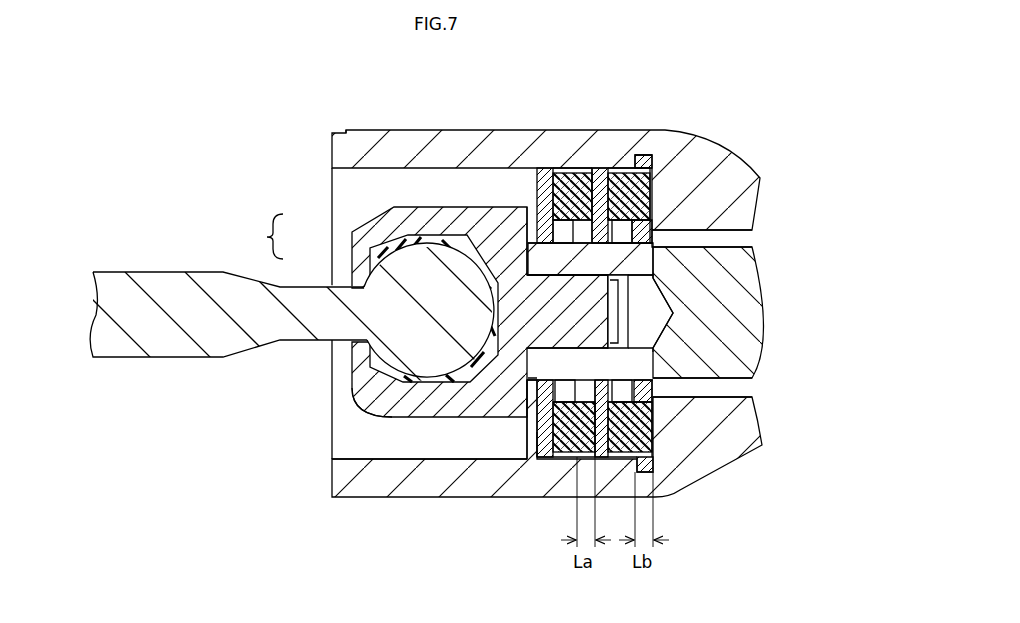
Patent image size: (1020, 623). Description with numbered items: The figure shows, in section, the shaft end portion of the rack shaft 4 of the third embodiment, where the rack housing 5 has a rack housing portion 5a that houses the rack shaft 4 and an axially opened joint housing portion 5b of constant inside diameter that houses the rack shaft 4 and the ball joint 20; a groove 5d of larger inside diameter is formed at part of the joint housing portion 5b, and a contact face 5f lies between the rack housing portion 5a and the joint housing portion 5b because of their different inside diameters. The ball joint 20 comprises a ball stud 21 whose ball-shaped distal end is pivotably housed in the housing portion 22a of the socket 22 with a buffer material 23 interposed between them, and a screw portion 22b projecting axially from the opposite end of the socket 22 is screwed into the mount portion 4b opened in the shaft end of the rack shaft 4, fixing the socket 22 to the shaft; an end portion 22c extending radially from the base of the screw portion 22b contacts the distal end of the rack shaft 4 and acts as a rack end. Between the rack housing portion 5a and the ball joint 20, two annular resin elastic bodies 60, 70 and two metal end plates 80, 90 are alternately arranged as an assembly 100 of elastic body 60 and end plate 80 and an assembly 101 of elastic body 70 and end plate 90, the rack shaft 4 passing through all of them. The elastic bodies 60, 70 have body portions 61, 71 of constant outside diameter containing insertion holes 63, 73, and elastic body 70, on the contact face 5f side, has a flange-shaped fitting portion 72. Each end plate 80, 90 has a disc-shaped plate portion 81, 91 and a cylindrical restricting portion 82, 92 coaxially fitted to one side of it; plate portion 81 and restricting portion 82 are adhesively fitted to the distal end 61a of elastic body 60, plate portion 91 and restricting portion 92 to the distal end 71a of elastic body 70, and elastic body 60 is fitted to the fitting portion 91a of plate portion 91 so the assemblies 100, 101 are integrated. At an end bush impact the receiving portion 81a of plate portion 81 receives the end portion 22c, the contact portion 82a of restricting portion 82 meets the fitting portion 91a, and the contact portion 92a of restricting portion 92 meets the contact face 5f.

The rack shaft 4 is at (758, 283).
The mount portion 4b is at (655, 282).
The rack housing 5 is at (471, 135).
The rack housing portion 5a is at (750, 235).
The joint housing portion 5b is at (378, 168).
The groove 5d is at (656, 155).
The contact face 5f is at (678, 230).
The ball joint 20 is at (258, 236).
The ball stud 21 is at (303, 287).
The socket 22 is at (368, 215).
The housing portion 22a is at (414, 255).
The screw portion 22b is at (558, 342).
The end portion 22c is at (527, 207).
The buffer material 23 is at (368, 368).
The elastic body 60 is at (578, 172).
The body portion 61 is at (560, 168).
The distal end 61a is at (537, 168).
The insertion hole 63 is at (587, 245).
The elastic body 70 is at (658, 171).
The body portion 71 is at (628, 172).
The distal end 71a is at (620, 172).
The fitting portion 72 is at (653, 197).
The insertion hole 73 is at (634, 238).
The end plate 80 is at (539, 463).
The plate portion 81 is at (530, 460).
The receiving portion 81a is at (537, 432).
The restricting portion 82 is at (537, 405).
The contact portion 82a is at (690, 380).
The end plate 90 is at (608, 463).
The plate portion 91 is at (576, 453).
The fitting portion 91a is at (553, 458).
The restricting portion 92 is at (650, 440).
The contact portion 92a is at (655, 404).
The assembly 100 is at (577, 144).
The assembly 101 is at (643, 141).